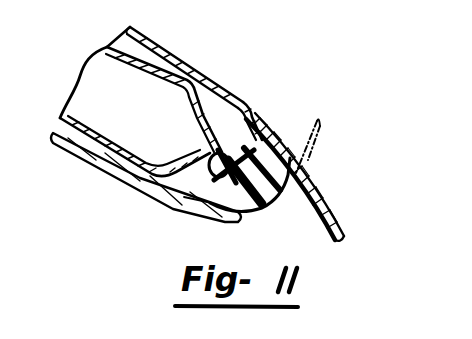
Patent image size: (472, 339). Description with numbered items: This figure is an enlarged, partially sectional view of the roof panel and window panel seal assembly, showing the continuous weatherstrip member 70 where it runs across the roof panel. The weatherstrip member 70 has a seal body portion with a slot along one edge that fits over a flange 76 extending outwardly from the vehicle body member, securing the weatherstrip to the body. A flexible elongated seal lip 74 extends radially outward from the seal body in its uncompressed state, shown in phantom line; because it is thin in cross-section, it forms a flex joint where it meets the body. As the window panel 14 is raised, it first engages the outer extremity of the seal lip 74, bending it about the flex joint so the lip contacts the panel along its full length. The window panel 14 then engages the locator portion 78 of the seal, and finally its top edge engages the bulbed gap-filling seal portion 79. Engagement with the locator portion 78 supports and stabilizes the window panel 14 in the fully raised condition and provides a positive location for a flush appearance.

The window panel 14 is at (329, 208).
The weatherstrip member 70 is at (262, 216).
The seal lip portion 74 is at (319, 150).
The flange 76 is at (184, 197).
The locator portion 78 is at (243, 140).
The bulbed gap-filling seal portion 79 is at (250, 128).